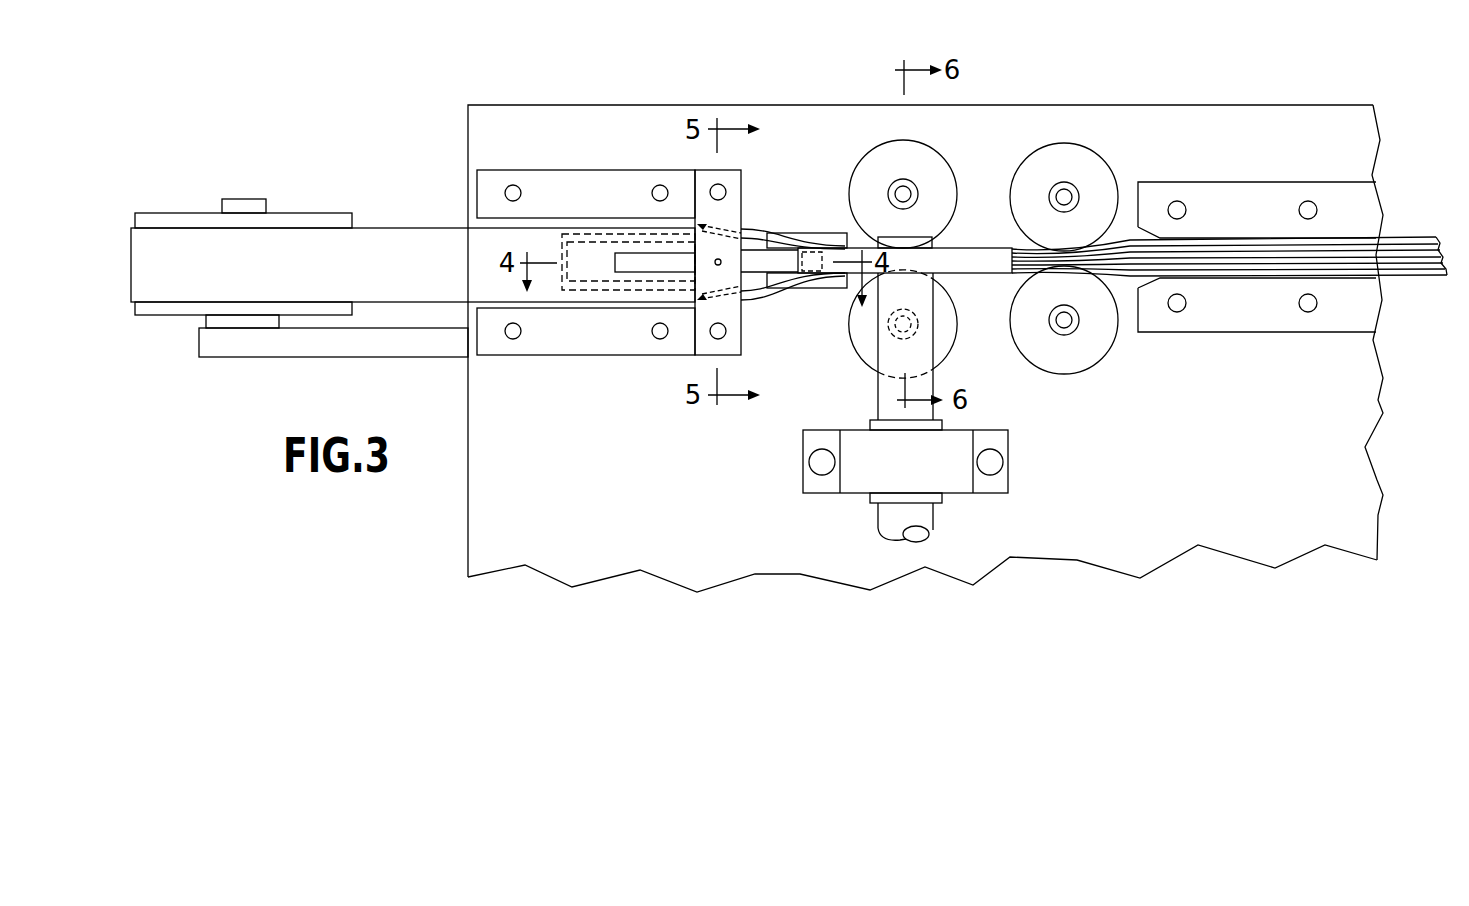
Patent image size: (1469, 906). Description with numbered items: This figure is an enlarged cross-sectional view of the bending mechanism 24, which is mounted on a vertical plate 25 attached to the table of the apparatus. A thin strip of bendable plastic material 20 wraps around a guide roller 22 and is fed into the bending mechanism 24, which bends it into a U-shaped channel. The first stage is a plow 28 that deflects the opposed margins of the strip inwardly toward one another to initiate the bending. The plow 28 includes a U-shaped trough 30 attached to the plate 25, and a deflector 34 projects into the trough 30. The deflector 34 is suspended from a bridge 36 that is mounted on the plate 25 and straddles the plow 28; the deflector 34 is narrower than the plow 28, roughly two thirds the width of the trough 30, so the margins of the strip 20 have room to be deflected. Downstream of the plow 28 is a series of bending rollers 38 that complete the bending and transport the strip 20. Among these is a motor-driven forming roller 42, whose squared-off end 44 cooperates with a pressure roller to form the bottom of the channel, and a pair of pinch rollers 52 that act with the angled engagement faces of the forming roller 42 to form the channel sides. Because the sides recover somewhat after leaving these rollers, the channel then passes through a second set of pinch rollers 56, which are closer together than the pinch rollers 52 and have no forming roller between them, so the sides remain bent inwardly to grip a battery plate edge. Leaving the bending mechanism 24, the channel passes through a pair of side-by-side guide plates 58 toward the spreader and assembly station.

The strip of bendable plastic material 20 is at (388, 247).
The guide roller 22 is at (178, 214).
The bending mechanism 24 is at (1092, 100).
The vertical plate 25 is at (1234, 458).
The plow 28 is at (627, 310).
The U-shaped trough 30 is at (575, 300).
The deflector 34 is at (638, 257).
The bridge 36 is at (733, 187).
The bending rollers 38 is at (1003, 136).
The forming roller 42 is at (980, 267).
The squared-off end 44 is at (1410, 230).
The pinch rollers 52 is at (868, 178).
The second set of pinch rollers 56 is at (1100, 170).
The guide plates 58 is at (1255, 312).